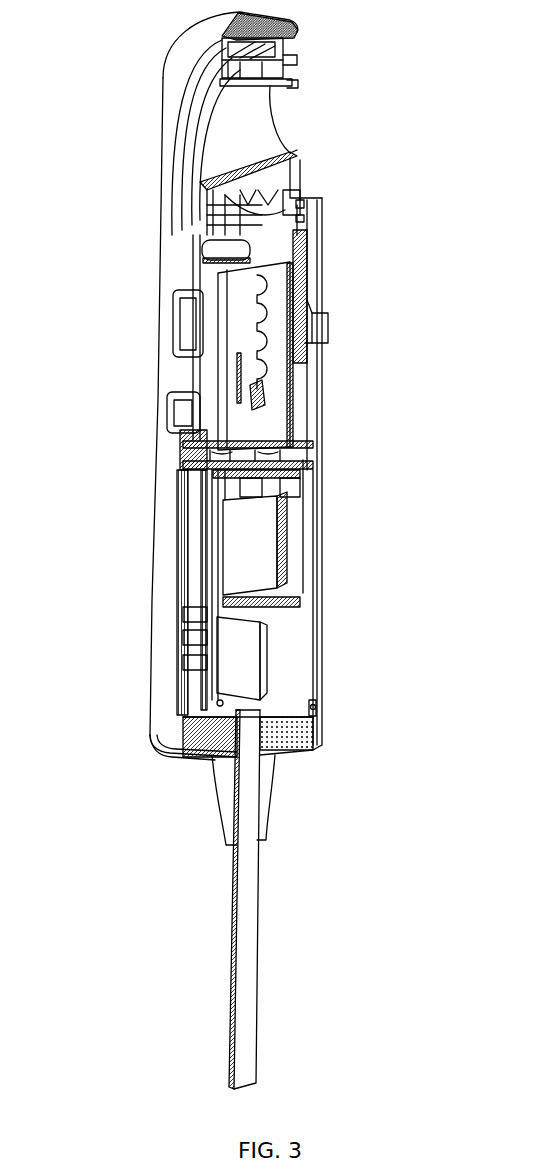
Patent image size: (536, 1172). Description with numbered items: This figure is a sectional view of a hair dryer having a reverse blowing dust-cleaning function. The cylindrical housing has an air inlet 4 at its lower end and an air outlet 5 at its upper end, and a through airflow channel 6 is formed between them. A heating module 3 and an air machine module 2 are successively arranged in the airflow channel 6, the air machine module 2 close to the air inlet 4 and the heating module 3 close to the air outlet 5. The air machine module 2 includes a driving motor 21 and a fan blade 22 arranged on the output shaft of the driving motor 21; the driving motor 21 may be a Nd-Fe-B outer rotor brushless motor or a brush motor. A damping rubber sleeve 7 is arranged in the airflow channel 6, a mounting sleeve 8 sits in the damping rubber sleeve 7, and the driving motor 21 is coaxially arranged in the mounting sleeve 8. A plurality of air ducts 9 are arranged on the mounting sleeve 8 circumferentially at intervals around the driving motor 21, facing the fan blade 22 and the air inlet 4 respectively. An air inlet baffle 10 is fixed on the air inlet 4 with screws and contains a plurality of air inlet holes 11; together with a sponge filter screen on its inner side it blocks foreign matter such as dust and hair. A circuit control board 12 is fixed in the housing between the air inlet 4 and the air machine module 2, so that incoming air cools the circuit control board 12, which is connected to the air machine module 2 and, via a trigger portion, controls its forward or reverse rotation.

The air machine module 2 is at (314, 453).
The driving motor 21 is at (300, 492).
The fan blade 22 is at (300, 434).
The heating module 3 is at (330, 315).
The air inlet 4 is at (315, 717).
The air outlet 5 is at (185, 175).
The airflow channel 6 is at (316, 632).
The damping rubber sleeve 7 is at (290, 603).
The mounting sleeve 8 is at (310, 583).
The air ducts 9 is at (177, 495).
The air inlet baffle 10 is at (173, 748).
The air inlet holes 11 is at (200, 752).
The circuit control board 12 is at (270, 660).